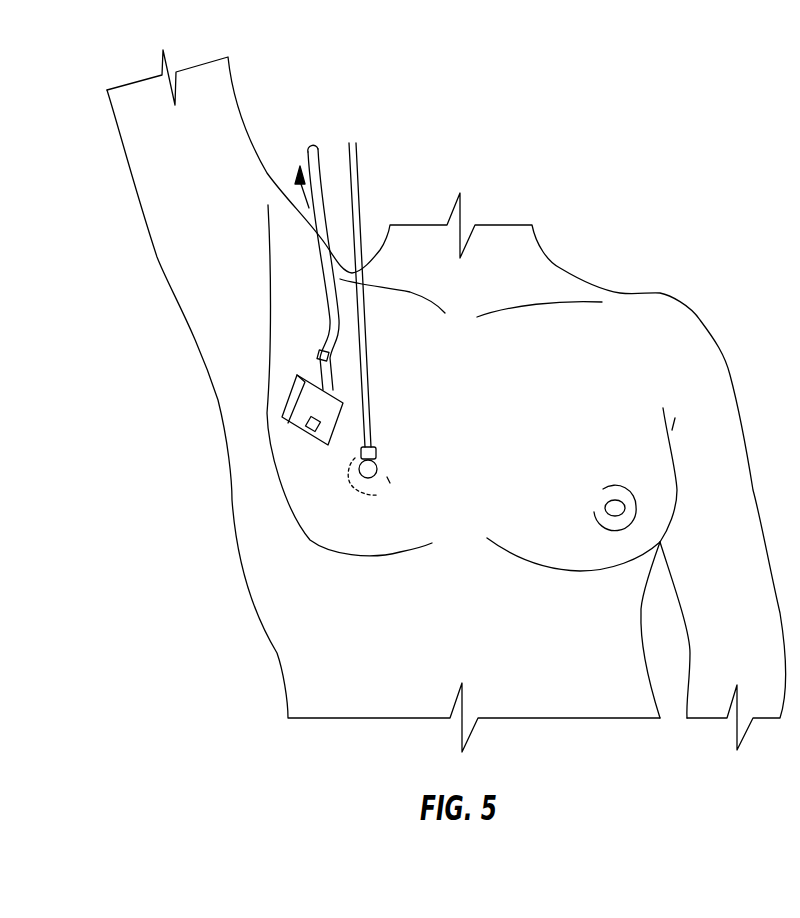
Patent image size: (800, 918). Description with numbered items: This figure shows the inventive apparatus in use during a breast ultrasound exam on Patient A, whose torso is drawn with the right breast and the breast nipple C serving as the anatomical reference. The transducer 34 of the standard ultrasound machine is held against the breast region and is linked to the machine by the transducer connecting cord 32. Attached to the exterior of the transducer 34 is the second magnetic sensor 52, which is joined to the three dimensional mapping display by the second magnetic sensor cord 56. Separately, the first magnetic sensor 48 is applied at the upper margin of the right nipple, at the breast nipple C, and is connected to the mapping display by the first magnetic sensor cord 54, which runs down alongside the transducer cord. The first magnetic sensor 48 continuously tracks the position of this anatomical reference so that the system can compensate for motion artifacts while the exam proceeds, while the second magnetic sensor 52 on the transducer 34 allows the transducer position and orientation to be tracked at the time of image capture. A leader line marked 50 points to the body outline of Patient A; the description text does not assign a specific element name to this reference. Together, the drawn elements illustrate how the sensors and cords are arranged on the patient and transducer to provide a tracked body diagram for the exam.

The transducer connecting cord 32 is at (348, 292).
The transducer 34 is at (287, 412).
The first magnetic sensor 48 is at (377, 453).
The breast 50 is at (390, 383).
The second magnetic sensor 52 is at (310, 440).
The first magnetic sensor cord 54 is at (359, 192).
The second magnetic sensor cord 56 is at (322, 170).
The Patient A is at (568, 662).
The breast nipple C is at (372, 488).